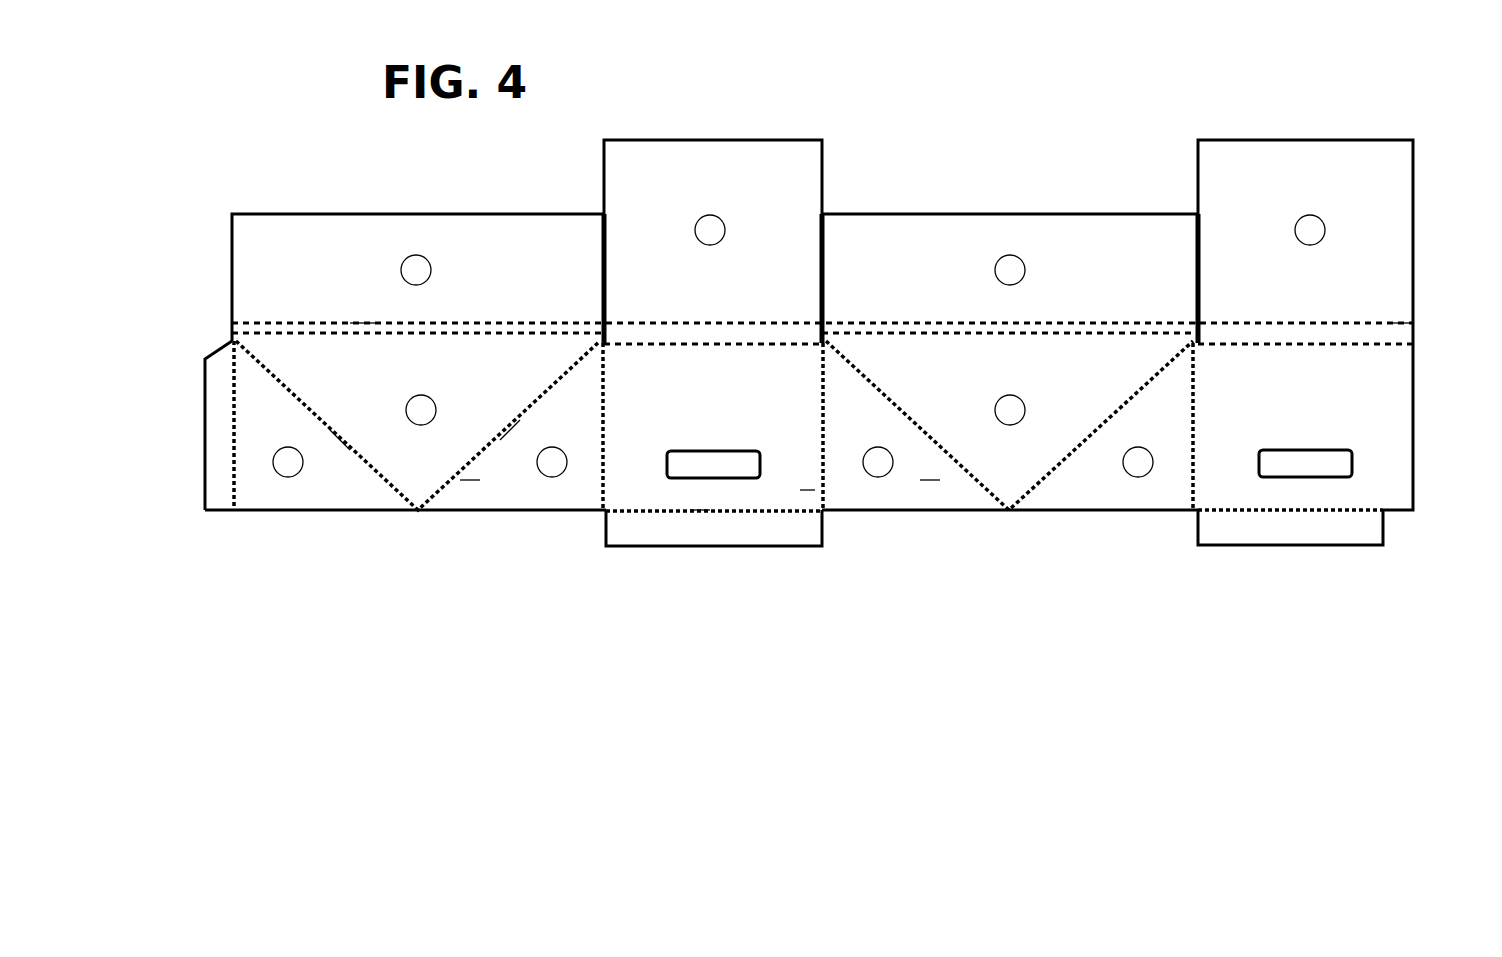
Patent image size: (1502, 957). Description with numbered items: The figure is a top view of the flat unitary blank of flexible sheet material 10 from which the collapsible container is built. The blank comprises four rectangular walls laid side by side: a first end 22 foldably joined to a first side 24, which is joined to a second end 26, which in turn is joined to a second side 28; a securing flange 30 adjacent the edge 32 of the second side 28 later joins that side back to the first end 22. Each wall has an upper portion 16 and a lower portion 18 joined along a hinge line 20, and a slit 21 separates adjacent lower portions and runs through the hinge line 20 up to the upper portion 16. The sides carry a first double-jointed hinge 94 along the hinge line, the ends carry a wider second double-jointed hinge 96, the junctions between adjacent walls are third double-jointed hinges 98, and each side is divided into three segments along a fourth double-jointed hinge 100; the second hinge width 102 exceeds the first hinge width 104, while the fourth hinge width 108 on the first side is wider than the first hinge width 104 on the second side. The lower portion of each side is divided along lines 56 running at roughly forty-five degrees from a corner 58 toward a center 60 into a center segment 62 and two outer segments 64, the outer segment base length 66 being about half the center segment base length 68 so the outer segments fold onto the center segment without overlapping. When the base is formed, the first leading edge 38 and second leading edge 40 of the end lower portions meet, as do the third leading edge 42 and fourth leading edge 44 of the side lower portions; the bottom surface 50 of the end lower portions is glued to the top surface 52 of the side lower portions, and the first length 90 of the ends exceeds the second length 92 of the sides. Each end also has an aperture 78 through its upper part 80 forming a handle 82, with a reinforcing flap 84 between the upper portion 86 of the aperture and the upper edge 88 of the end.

The unitary blank of flexible sheet material 10 is at (962, 150).
The upper portion 16 is at (1430, 415).
The lower portion 18 is at (1430, 246).
The hinge line 20 is at (1430, 333).
The slit 21 is at (601, 212).
The first end 22 is at (1380, 460).
The first side 24 is at (928, 476).
The second end 26 is at (806, 481).
The second side 28 is at (470, 482).
The securing flange 30 is at (205, 455).
The edge 32 is at (233, 512).
The first leading edge 38 is at (1300, 140).
The second leading edge 40 is at (712, 140).
The third leading edge 42 is at (1037, 214).
The fourth leading edge 44 is at (346, 214).
The bottom surface 50 is at (1010, 230).
The top surface 52 is at (713, 270).
The fold lines 56 is at (340, 450).
The corner 58 is at (232, 333).
The center 60 is at (418, 512).
The center segment 62 is at (715, 410).
The outer segments 64 is at (713, 462).
The outer segment base length 66 is at (300, 512).
The center segment base length 68 is at (366, 335).
The aperture 78 is at (693, 451).
The upper part 80 is at (660, 455).
The handle 82 is at (696, 497).
The reinforcing flap 84 is at (772, 525).
The upper portion of the aperture 86 is at (735, 478).
The upper edge 88 is at (1384, 513).
The first length 90 is at (820, 218).
The second length 92 is at (235, 268).
The first double-jointed hinge 94 is at (457, 335).
The second double-jointed hinge 96 is at (672, 345).
The third double-jointed hinge 98 is at (233, 408).
The fourth double-jointed hinge 100 is at (300, 398).
The second hinge width 102 is at (822, 340).
The first hinge width 104 is at (1196, 326).
The fourth hinge width 108 is at (232, 325).